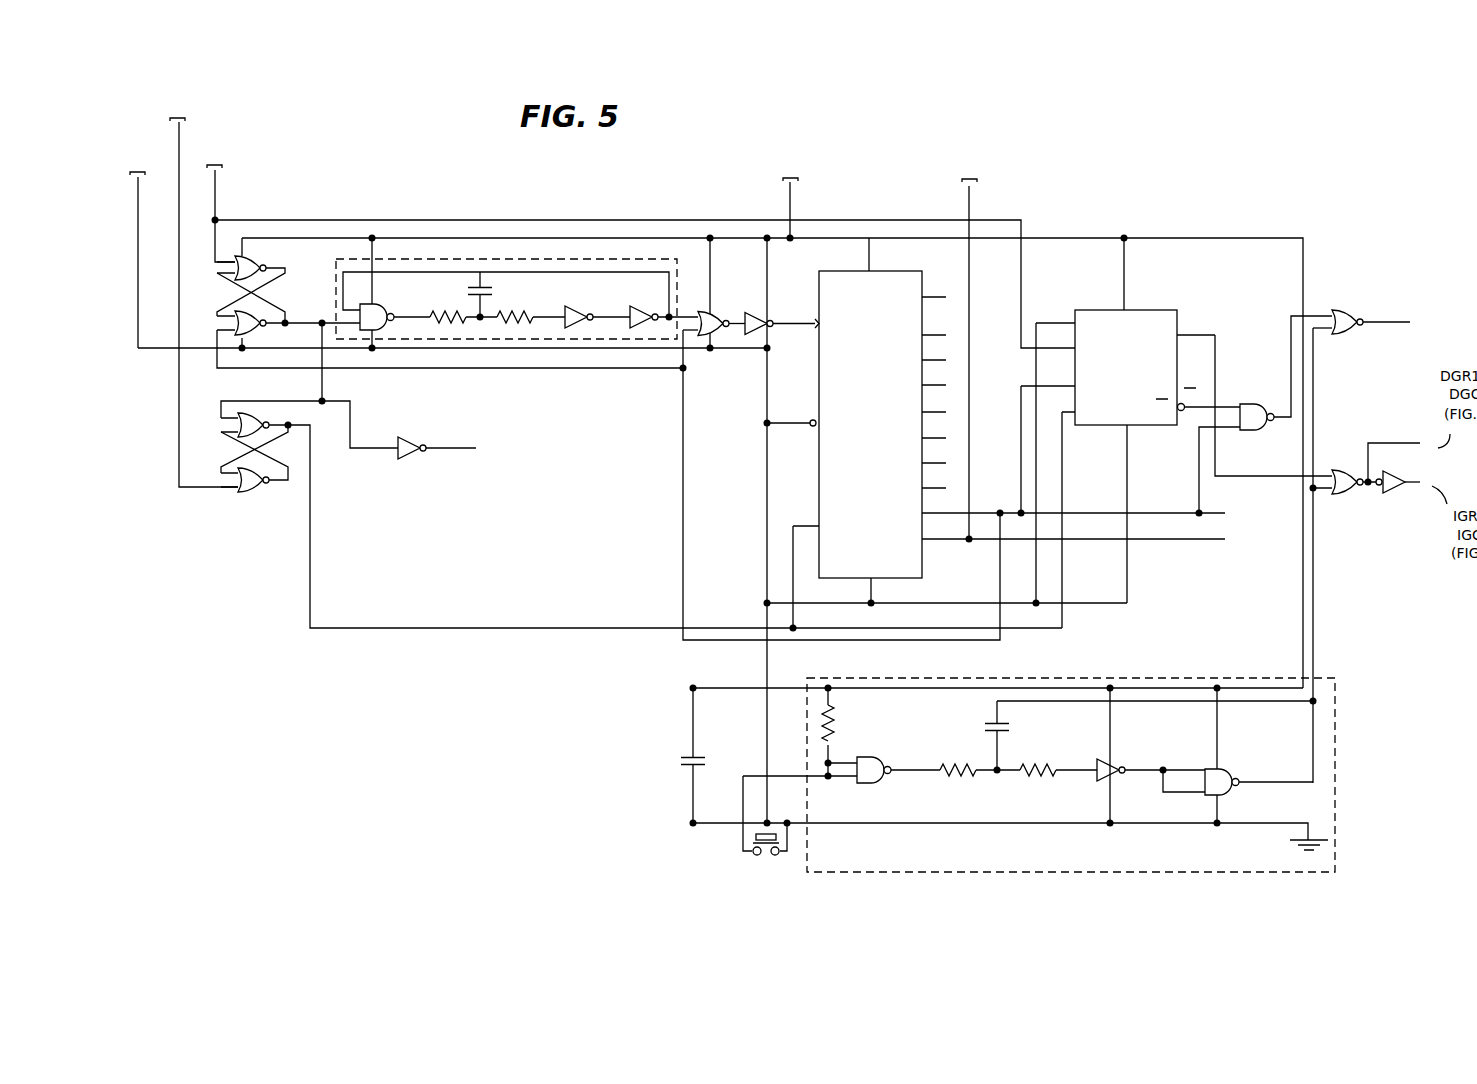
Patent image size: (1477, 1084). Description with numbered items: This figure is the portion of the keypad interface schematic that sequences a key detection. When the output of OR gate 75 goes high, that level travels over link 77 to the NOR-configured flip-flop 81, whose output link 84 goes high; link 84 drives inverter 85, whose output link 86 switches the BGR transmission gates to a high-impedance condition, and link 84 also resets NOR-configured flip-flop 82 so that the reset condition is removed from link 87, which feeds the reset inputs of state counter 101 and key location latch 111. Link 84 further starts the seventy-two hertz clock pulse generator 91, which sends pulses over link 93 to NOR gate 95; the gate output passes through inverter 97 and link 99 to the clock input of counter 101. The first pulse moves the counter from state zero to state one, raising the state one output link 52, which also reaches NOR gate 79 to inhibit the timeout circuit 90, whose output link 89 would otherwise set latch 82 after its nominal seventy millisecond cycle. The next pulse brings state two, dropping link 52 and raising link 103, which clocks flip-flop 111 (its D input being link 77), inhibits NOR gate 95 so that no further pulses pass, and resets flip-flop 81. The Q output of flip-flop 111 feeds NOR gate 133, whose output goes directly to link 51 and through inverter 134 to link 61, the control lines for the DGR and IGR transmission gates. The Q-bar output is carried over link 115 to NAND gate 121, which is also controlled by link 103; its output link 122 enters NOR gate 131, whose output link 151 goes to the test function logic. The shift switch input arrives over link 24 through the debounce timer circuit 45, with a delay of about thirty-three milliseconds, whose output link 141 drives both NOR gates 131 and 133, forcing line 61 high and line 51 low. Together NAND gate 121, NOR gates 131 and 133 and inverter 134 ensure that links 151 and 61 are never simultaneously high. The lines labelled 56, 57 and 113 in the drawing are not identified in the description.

The link 24 is at (752, 775).
The switch contact-debounce timer circuit 45 is at (1335, 761).
The link 51 is at (1400, 443).
The state 1 output link 52 is at (968, 272).
The ground line 56 is at (137, 231).
The +V supply line 57 is at (797, 206).
The link 61 is at (1417, 486).
The OR gate 75 is at (250, 202).
The link 77 is at (324, 222).
The NOR gate 79 is at (967, 158).
The NOR-configured flip-flop 81 is at (208, 304).
The NOR-configured flip-flop 82 is at (208, 459).
The link 84 is at (353, 421).
The inverter 85 is at (408, 438).
The output link 86 is at (458, 446).
The link 87 is at (513, 627).
The link 89 is at (179, 421).
The timeout circuit 90 is at (170, 250).
The state counter advance clock pulse generator 91 is at (626, 304).
The link 93 is at (692, 313).
The NOR gate 95 is at (724, 318).
The inverter 97 is at (768, 318).
The link 99 is at (790, 323).
The state counter 101 is at (847, 272).
The state 2 output link 103 is at (1021, 437).
The key location latch 111 is at (1158, 311).
The Q output line of flip flop 113 is at (1258, 476).
The link 115 is at (1226, 410).
The NAND gate 121 is at (1257, 400).
The link 122 is at (1284, 419).
The NOR gate 131 is at (1347, 306).
The NOR gate 133 is at (1347, 498).
The inverter 134 is at (1397, 495).
The link 141 is at (1317, 642).
The link 151 is at (1373, 321).